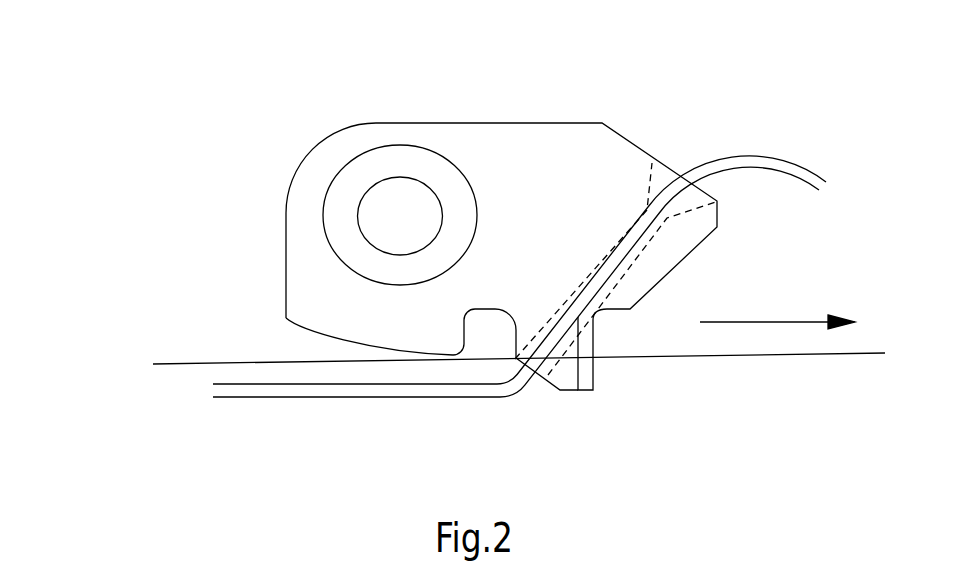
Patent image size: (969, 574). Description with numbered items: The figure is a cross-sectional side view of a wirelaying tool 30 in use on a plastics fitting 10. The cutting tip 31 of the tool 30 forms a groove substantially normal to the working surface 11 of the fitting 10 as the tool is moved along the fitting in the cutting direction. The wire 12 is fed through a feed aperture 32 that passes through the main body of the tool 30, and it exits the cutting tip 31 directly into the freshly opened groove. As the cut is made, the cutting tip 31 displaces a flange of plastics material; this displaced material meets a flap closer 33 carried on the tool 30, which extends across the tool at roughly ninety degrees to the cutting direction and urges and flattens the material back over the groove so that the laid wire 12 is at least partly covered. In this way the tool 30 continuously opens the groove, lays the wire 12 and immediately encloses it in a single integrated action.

The fitting 10 is at (245, 377).
The working surface 11 is at (183, 362).
The wire 12 is at (487, 393).
The tool 30 is at (507, 178).
The cutting tip 31 is at (590, 381).
The feed aperture 32 is at (610, 248).
The flap closer 33 is at (443, 343).